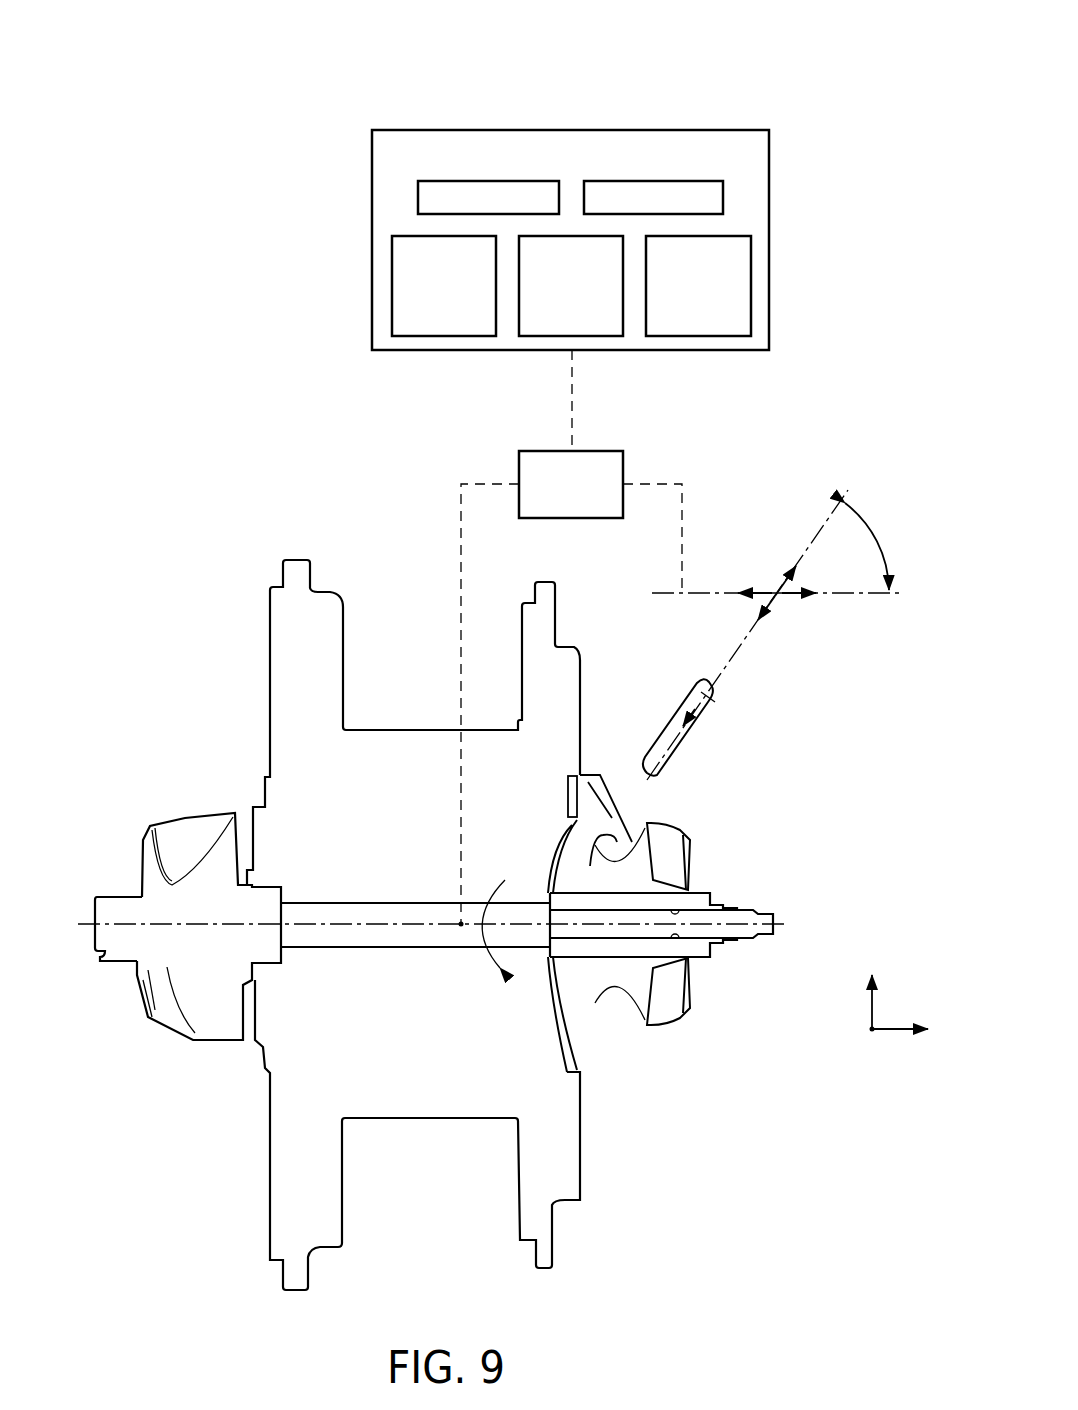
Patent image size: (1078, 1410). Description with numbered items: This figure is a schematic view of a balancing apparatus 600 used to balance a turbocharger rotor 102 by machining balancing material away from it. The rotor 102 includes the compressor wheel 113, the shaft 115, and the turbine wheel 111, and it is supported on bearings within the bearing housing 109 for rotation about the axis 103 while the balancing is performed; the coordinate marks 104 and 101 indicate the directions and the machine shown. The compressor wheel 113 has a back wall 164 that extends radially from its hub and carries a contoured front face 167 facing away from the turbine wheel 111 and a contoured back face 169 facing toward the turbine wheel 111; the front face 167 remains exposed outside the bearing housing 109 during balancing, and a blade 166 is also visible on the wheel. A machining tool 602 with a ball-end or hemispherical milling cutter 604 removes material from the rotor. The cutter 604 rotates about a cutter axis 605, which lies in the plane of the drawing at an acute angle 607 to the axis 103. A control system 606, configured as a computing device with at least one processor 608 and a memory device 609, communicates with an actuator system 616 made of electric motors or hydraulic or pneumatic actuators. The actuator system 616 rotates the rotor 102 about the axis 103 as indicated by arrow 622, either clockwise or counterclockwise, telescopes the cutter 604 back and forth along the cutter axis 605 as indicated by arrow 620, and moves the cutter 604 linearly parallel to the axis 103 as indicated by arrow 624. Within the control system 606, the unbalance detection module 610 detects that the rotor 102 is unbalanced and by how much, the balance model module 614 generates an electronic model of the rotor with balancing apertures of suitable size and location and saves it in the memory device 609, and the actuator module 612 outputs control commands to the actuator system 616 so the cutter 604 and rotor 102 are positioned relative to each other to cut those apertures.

The balancing apparatus 600 is at (118, 98).
The control system 606 is at (712, 122).
The memory device 609 is at (418, 196).
The processor 608 is at (723, 196).
The unbalance detection module 610 is at (392, 290).
The actuator module 612 is at (597, 337).
The balance model module 614 is at (751, 290).
The actuator system 616 is at (542, 451).
The turbocharger 101 is at (585, 1213).
The rotor 102 is at (359, 900).
The axis 103 is at (895, 1030).
The radial direction 104 is at (872, 1005).
The bearing housing 109 is at (425, 1118).
The turbine wheel 111 is at (180, 954).
The compressor wheel 113 is at (670, 1042).
The shaft 115 is at (398, 936).
The back wall 164 is at (600, 803).
The turbine blade 166 is at (595, 867).
The front face 167 is at (587, 815).
The back face 169 is at (568, 815).
The machining tool 602 is at (712, 732).
The cutter 604 is at (678, 757).
The cutter axis 605 is at (735, 650).
The acute angle 607 is at (877, 542).
The arrow 620 is at (772, 605).
The arrow 622 is at (511, 886).
The arrow 624 is at (768, 592).